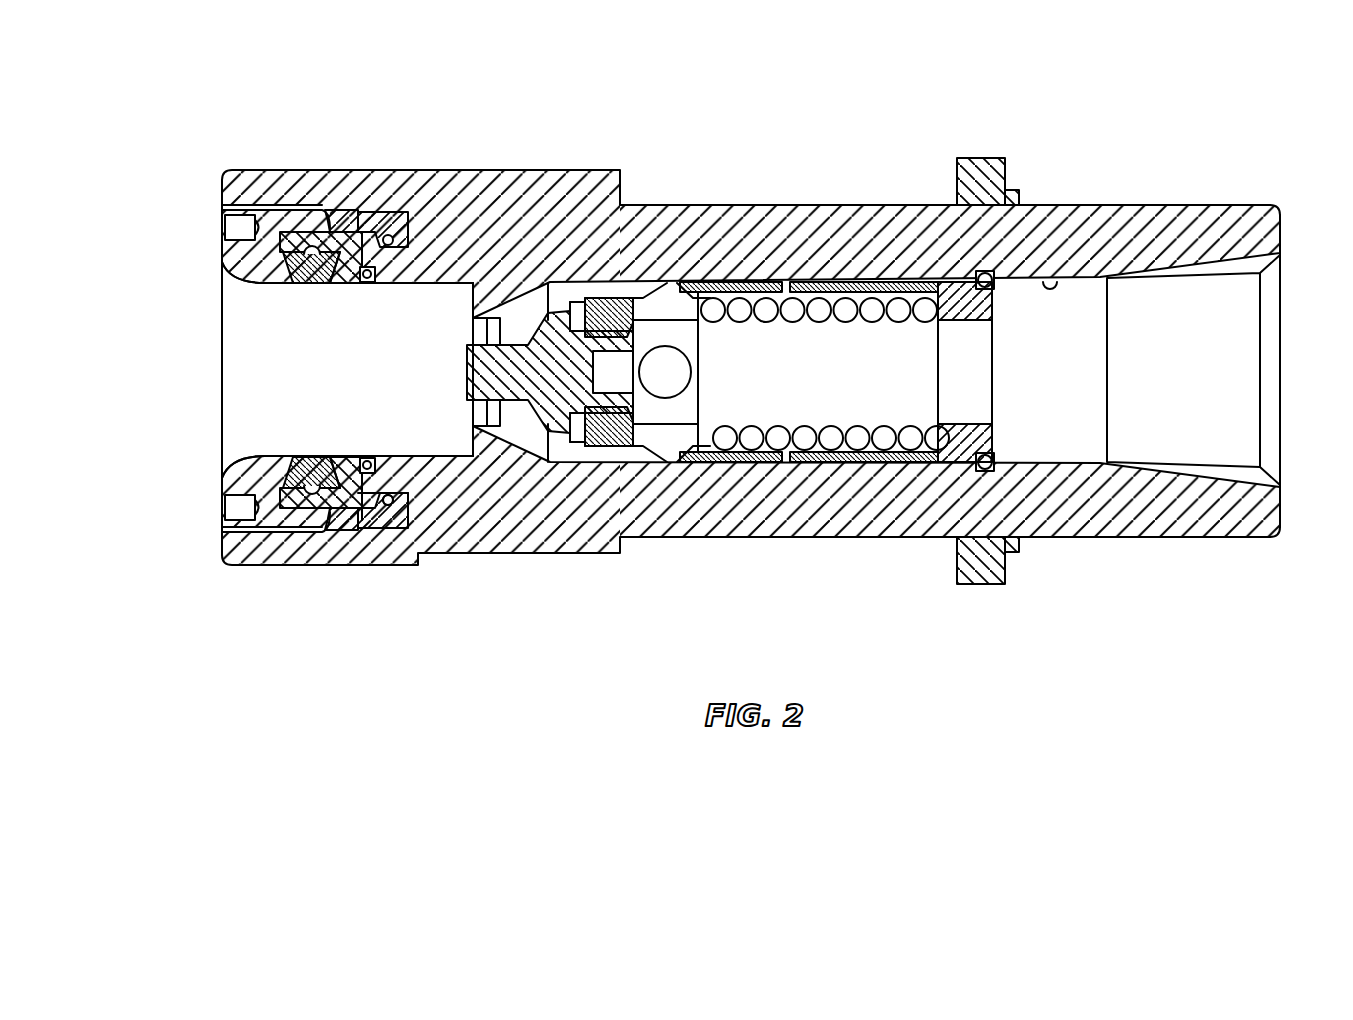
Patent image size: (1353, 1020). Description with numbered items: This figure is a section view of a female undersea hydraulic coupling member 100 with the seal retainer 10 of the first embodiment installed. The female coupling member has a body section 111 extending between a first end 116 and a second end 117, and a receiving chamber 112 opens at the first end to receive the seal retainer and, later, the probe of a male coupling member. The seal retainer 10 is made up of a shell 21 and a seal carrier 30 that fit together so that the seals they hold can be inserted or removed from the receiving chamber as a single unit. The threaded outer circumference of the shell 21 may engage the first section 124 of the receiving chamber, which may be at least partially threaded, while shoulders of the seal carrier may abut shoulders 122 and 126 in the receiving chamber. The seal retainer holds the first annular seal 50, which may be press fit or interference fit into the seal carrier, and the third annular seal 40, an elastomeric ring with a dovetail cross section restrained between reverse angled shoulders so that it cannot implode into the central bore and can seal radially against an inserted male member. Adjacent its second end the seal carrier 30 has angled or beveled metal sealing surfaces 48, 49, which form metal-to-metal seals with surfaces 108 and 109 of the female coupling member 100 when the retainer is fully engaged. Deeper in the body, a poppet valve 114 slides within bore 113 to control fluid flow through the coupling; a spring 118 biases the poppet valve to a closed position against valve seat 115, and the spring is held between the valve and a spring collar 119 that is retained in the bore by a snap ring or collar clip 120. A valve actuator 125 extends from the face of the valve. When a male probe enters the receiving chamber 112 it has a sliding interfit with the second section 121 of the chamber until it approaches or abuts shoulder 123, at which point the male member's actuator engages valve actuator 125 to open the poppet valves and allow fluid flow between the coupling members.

The female coupling member 100 is at (983, 68).
The seal retainer 10 is at (240, 405).
The shell 21 is at (283, 517).
The seal carrier 30 is at (367, 520).
The third annular seal 40 is at (222, 489).
The metal sealing surface 48 is at (395, 500).
The metal sealing surface 49 is at (384, 495).
The first annular seal 50 is at (363, 283).
The surface of female coupling member 108 is at (398, 212).
The surface of female coupling member 109 is at (356, 210).
The body section 111 is at (727, 210).
The receiving chamber 112 is at (490, 317).
The bore 113 is at (1058, 282).
The poppet valve 114 is at (547, 418).
The valve seat 115 is at (485, 430).
The first end 116 is at (220, 193).
The second end 117 is at (1283, 215).
The spring 118 is at (752, 440).
The spring collar 119 is at (842, 458).
The snap ring or collar clip 120 is at (980, 465).
The second section of the receiving chamber 121 is at (420, 456).
The shoulder 122 is at (367, 457).
The shoulder 123 is at (472, 300).
The first section of the receiving chamber 124 is at (392, 520).
The valve actuator 125 is at (549, 283).
The shoulder 126 is at (400, 515).